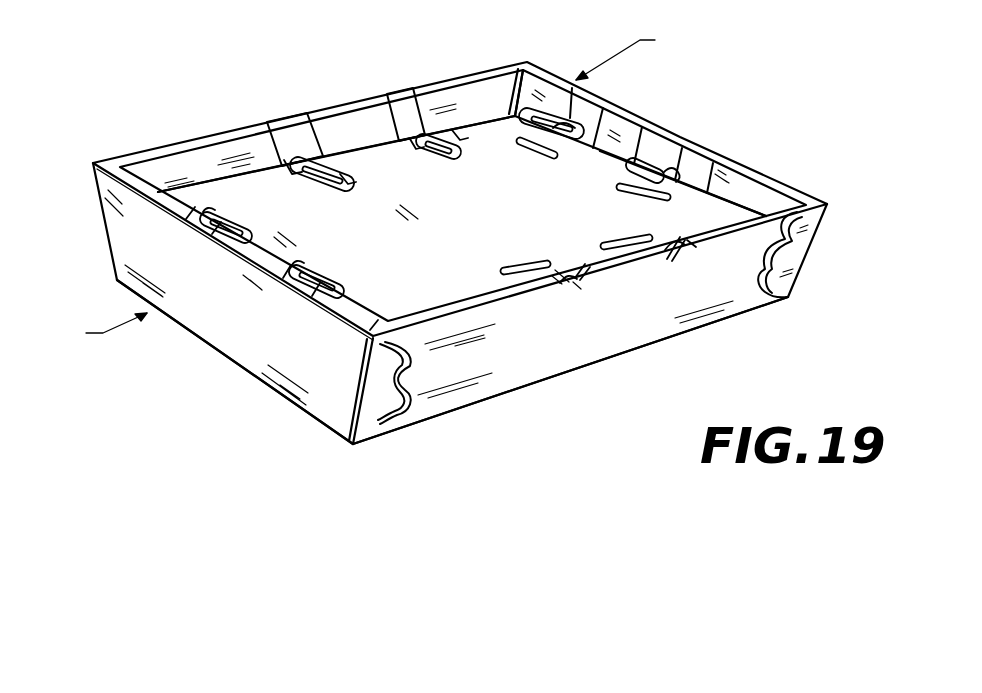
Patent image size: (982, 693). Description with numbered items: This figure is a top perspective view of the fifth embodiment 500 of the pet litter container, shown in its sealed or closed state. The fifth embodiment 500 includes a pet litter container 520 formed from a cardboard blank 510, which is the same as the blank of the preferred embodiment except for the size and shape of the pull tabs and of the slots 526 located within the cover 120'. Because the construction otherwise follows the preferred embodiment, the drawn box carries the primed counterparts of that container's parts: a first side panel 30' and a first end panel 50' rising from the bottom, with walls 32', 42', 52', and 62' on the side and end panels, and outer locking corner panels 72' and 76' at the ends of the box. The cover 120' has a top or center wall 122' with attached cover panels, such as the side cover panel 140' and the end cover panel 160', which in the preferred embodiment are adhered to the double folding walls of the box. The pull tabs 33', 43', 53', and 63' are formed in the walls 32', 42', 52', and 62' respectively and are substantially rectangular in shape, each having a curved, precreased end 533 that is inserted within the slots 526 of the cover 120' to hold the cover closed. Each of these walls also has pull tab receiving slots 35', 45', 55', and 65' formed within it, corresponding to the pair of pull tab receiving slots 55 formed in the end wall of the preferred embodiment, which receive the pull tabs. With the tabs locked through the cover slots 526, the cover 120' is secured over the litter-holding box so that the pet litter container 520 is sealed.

The fifth embodiment 500 is at (853, 79).
The cardboard blank 510 is at (96, 328).
The pet litter container 520 is at (639, 53).
The slots 526 is at (235, 218).
The curved, precreased end 533 is at (452, 134).
The front wall 30' is at (570, 370).
The wall 32' is at (719, 255).
The pull tab 33' is at (652, 286).
The pull tab receiving slot 35' is at (619, 279).
The wall 42' is at (422, 89).
The pull tab 43' is at (373, 177).
The pull tab receiving slot 45' is at (319, 113).
The left wall 50' is at (235, 362).
The wall 52' is at (340, 336).
The pull tab 53' is at (233, 267).
The pull tab receiving slots 55 is at (169, 220).
The pull tab receiving slot 55' is at (266, 280).
The wall 62' is at (569, 75).
The pull tab 63' is at (601, 134).
The pull tab receiving slot 65' is at (673, 128).
The scalloped end bracket 72' is at (420, 408).
The scalloped end bracket 76' is at (818, 254).
The cover 120' is at (552, 59).
The floor 122' is at (510, 216).
The rear left wall 140' is at (218, 153).
The right wall 160' is at (711, 176).